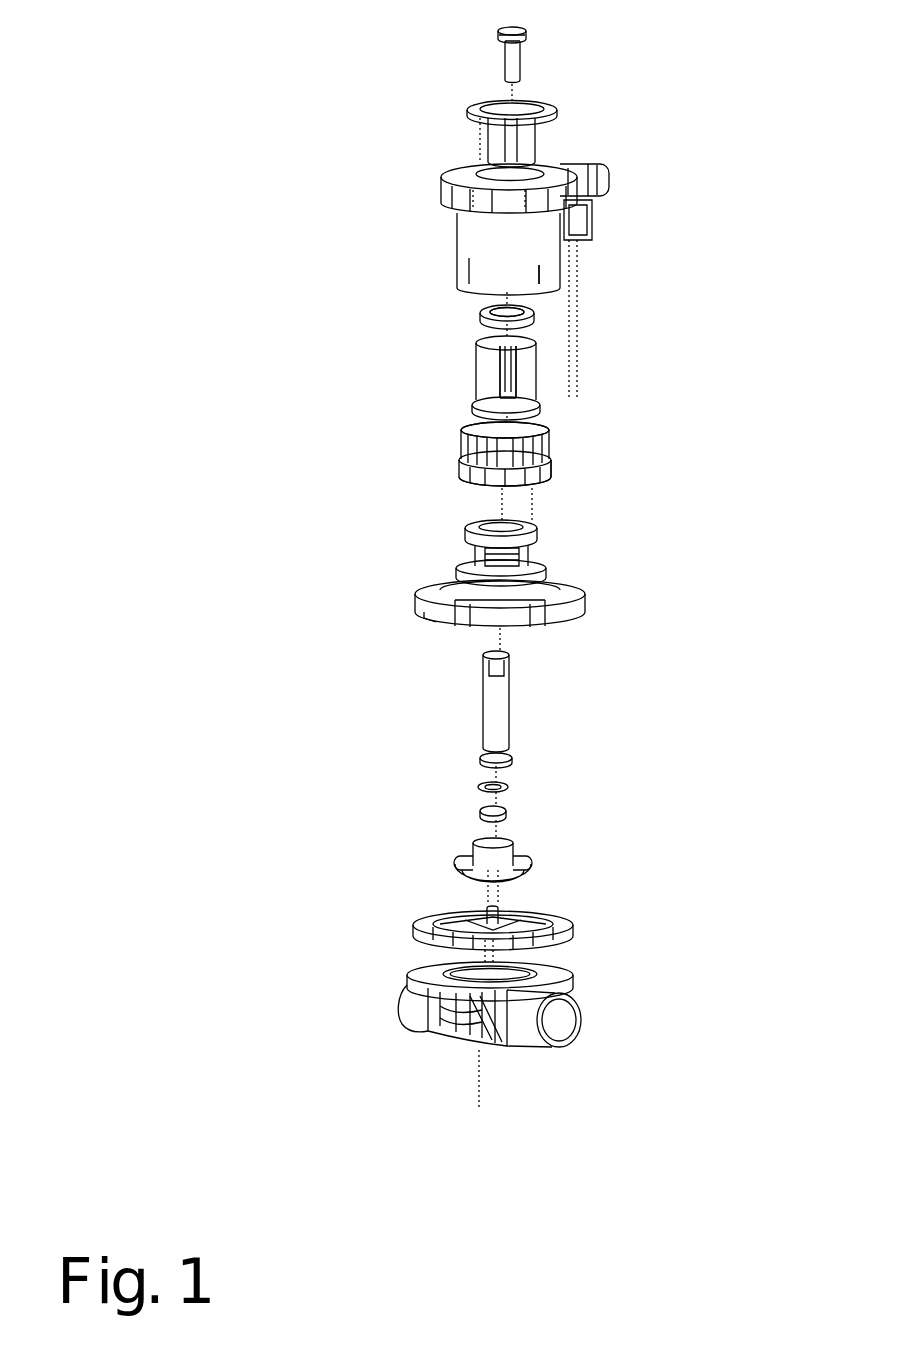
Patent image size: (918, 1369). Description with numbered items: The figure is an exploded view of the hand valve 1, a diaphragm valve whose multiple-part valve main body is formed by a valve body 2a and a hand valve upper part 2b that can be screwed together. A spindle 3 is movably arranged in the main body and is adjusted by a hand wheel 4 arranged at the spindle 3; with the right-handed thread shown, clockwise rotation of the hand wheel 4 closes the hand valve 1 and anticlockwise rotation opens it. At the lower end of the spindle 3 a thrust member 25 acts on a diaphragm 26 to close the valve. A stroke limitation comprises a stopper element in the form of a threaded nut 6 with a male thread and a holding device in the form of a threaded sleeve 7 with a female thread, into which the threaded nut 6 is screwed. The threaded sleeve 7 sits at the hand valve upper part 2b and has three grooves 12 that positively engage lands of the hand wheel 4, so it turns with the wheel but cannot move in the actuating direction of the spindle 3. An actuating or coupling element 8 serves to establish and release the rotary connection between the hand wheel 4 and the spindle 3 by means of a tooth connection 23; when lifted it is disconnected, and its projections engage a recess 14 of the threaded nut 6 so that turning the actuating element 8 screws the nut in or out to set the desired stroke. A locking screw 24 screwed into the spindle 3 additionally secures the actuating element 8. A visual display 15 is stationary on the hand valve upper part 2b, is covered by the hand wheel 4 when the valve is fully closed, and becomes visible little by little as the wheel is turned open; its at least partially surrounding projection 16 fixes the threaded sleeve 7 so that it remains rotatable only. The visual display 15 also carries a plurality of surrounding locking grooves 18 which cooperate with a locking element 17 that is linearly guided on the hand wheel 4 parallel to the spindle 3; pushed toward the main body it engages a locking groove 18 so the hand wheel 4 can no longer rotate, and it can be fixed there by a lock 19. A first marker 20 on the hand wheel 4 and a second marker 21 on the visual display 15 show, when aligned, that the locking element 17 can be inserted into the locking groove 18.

The hand valve 1 is at (258, 124).
The valve body 2a is at (428, 603).
The hand valve upper part 2b is at (418, 1012).
The spindle 3 is at (503, 725).
The hand wheel 4 is at (480, 231).
The threaded nut 6 is at (534, 318).
The threaded sleeve 7 is at (531, 377).
The actuating element 8 is at (553, 110).
The groove of the threaded sleeve 12 is at (533, 377).
The recess of the threaded nut 14 is at (503, 307).
The visual display 15 is at (548, 465).
The projection of the visual display 16 is at (536, 427).
The locking element 17 is at (603, 168).
The locking groove 18 is at (510, 447).
The lock 19 is at (590, 223).
The first marker 20 is at (541, 277).
The second marker 21 is at (544, 477).
The tooth connection 23 is at (483, 116).
The locking screw 24 is at (510, 57).
The thrust member 25 is at (506, 856).
The diaphragm 26 is at (540, 921).